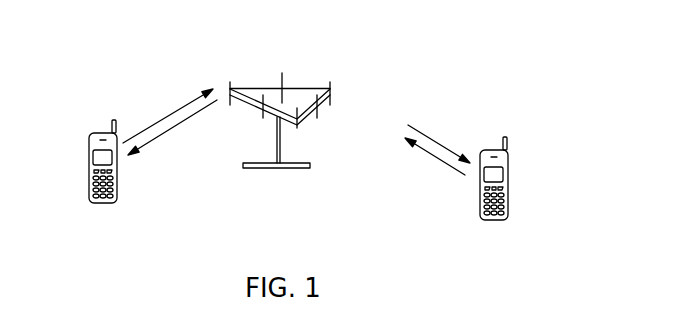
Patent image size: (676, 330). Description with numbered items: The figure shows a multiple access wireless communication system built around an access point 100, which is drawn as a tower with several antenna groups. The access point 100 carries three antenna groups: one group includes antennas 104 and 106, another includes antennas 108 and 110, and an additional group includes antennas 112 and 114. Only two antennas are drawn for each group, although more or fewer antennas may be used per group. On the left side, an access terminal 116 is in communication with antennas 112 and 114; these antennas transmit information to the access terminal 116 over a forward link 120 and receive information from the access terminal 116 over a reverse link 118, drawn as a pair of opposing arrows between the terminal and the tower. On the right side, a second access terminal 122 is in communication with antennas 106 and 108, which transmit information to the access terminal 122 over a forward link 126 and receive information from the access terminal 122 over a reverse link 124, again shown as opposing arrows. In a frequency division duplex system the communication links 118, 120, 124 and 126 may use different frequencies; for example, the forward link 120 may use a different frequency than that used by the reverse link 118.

The access point 100 is at (287, 168).
The antenna 104 is at (298, 126).
The antenna 106 is at (318, 115).
The antenna 108 is at (333, 97).
The antenna 110 is at (282, 80).
The antenna 112 is at (231, 82).
The antenna 114 is at (263, 117).
The access terminal 116 is at (88, 150).
The reverse link 118 is at (173, 111).
The forward link 120 is at (166, 133).
The access terminal 122 is at (508, 170).
The reverse link 124 is at (443, 162).
The forward link 126 is at (438, 142).